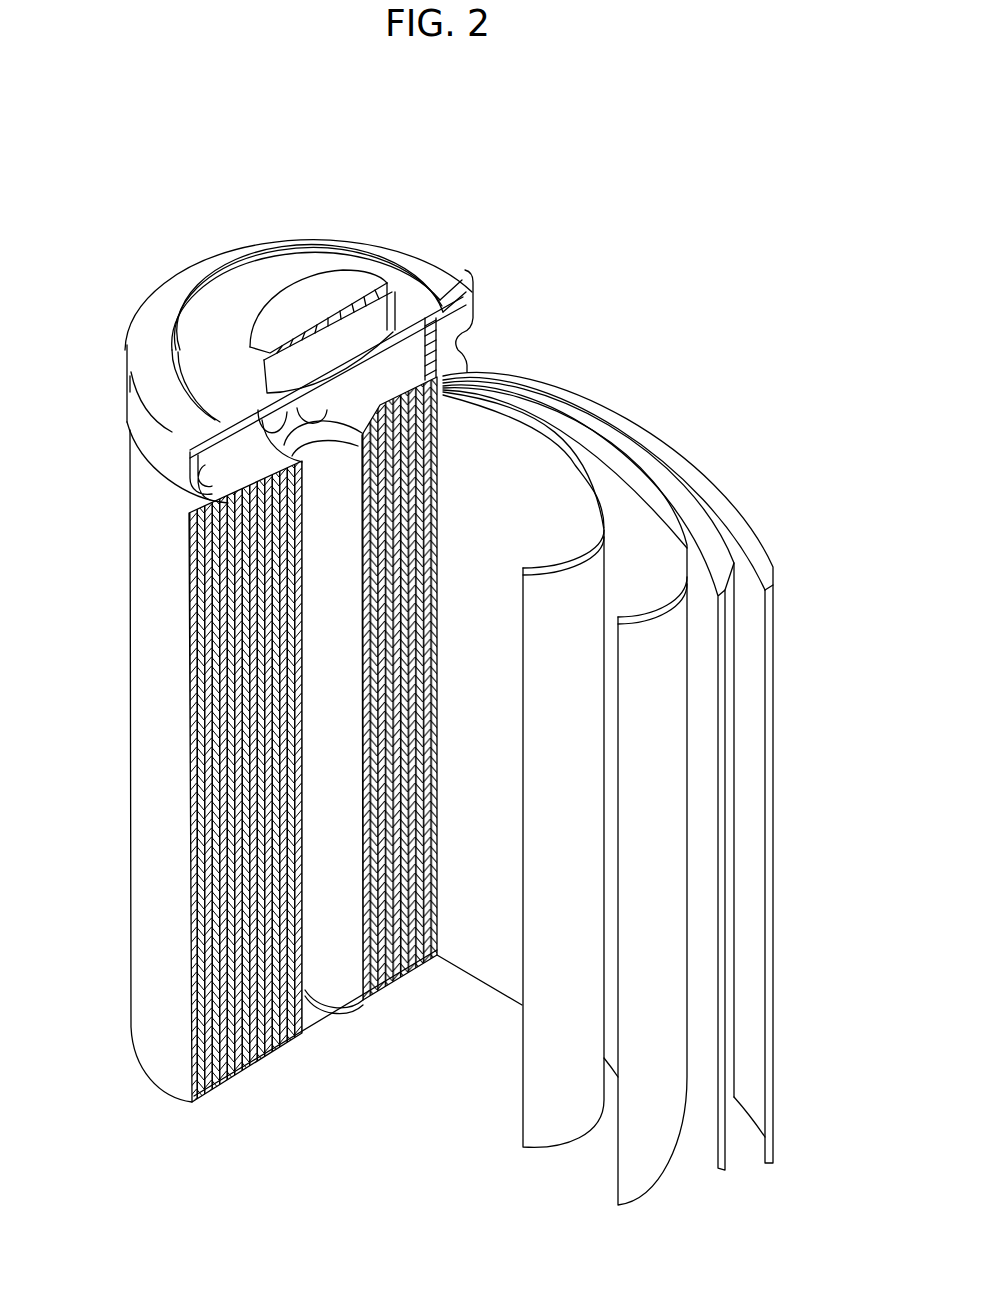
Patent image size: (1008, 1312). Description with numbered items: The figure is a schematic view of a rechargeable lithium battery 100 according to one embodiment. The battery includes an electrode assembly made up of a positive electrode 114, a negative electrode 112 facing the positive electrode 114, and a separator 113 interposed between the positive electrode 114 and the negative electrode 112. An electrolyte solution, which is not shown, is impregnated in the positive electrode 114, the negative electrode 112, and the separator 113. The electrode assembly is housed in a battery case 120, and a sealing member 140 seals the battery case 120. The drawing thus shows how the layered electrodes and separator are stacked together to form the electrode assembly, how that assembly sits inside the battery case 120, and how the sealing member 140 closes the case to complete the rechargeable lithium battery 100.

The rechargeable lithium battery 100 is at (537, 216).
The negative electrode 112 is at (768, 574).
The separator 113 is at (555, 450).
The positive electrode 114 is at (643, 513).
The battery case 120 is at (148, 677).
The sealing member 140 is at (265, 305).